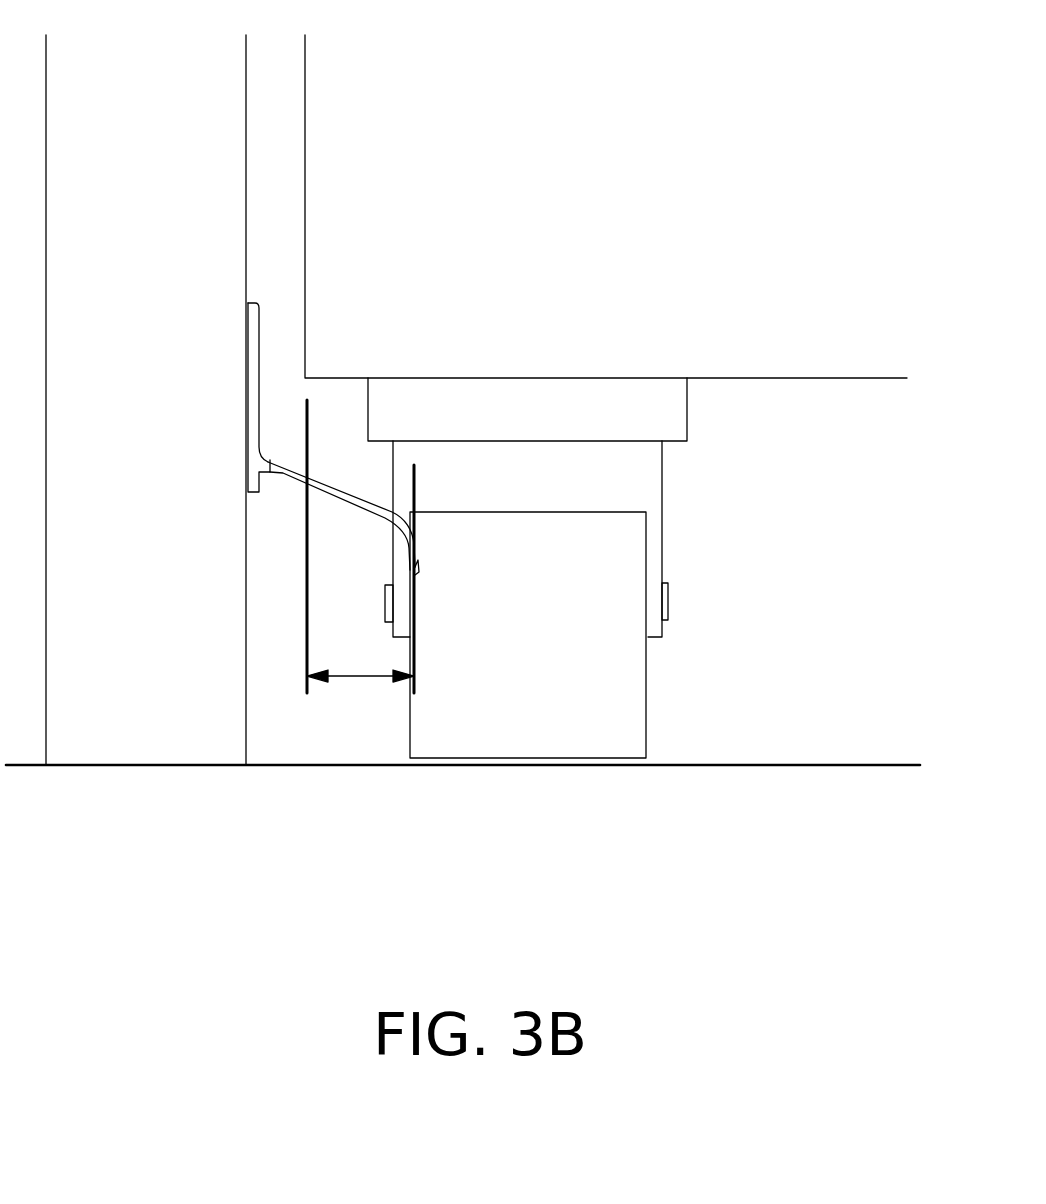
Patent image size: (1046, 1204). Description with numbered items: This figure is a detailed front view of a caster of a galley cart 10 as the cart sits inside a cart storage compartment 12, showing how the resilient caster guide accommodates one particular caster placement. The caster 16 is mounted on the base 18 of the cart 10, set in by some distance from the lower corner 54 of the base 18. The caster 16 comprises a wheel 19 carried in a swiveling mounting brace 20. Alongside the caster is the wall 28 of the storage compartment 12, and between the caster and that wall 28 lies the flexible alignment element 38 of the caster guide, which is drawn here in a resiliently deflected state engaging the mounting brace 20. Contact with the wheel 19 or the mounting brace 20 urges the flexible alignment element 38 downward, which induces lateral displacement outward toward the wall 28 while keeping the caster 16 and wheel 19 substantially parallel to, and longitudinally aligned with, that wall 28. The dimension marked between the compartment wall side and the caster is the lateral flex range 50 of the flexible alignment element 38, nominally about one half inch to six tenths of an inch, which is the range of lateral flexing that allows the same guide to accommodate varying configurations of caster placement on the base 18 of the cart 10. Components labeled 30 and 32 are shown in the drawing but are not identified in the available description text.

The galley cart 10 is at (690, 118).
The cart storage compartment 12 is at (897, 594).
The caster 16 is at (553, 750).
The base 18 is at (805, 378).
The wheel 19 is at (603, 692).
The mounting brace 20 is at (617, 475).
The wall 28 is at (244, 105).
The wall bracket 30 is at (258, 305).
The strap 32 is at (253, 380).
The flexible alignment element 38 is at (352, 495).
The lateral flex range 50 is at (358, 677).
The lower corner 54 is at (304, 377).